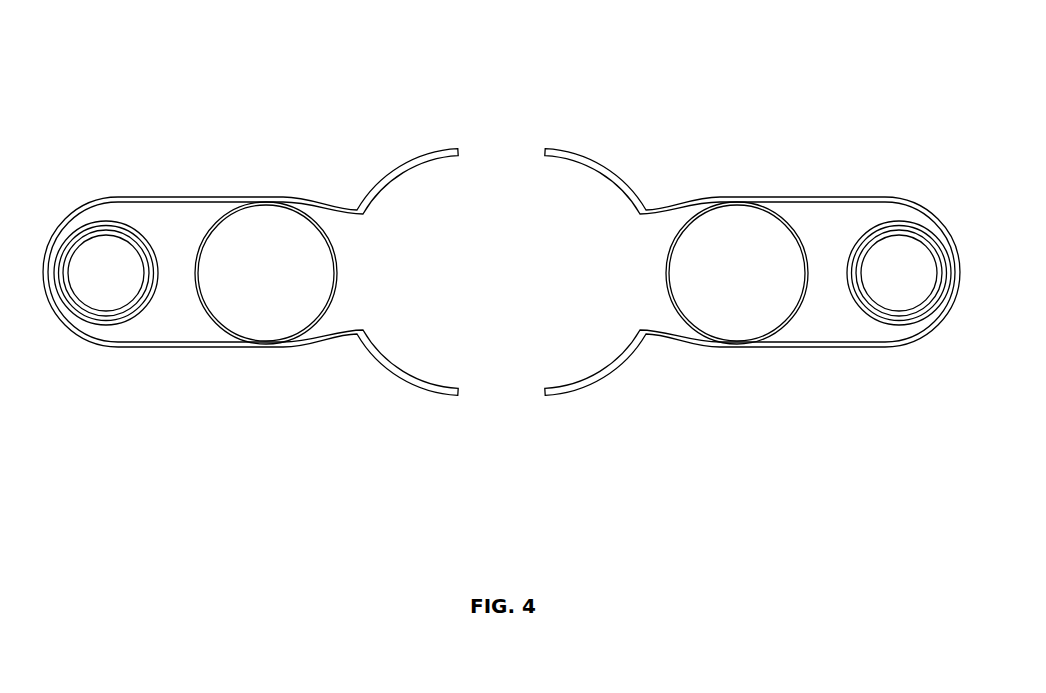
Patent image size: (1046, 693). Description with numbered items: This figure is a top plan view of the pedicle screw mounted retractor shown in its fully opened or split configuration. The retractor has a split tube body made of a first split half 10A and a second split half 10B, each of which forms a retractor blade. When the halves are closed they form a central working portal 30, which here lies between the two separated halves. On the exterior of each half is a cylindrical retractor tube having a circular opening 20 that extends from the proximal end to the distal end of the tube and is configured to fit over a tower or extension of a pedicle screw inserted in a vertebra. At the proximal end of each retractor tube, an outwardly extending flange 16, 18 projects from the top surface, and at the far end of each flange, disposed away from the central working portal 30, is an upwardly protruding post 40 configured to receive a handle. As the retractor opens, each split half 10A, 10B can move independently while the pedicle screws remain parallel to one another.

The first split half 10A is at (187, 197).
The second split half 10B is at (798, 197).
The outwardly extending flange 16 is at (152, 348).
The outwardly extending flange 18 is at (792, 357).
The opening 20 is at (282, 225).
The central working portal 30 is at (528, 190).
The post 40 is at (98, 253).